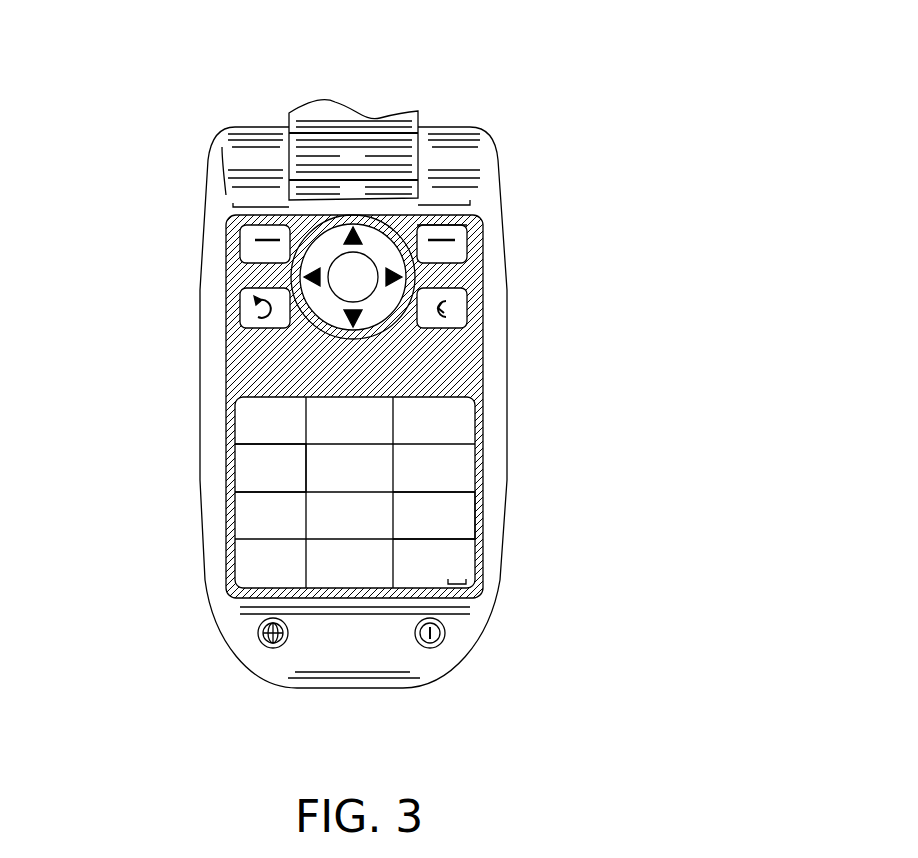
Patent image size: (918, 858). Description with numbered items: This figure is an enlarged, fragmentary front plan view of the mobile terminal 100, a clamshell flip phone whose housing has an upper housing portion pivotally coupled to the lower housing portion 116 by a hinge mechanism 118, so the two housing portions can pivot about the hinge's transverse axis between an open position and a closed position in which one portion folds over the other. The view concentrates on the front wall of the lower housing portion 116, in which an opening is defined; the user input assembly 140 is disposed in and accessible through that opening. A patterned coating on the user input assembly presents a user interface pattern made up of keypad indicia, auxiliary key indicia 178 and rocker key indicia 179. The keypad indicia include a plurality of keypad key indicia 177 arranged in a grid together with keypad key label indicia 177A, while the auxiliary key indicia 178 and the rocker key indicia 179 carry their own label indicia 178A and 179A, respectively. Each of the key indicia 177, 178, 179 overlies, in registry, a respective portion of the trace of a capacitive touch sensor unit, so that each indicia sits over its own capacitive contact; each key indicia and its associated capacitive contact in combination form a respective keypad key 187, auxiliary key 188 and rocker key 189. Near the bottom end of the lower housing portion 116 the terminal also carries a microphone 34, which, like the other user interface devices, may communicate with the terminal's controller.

The mobile terminal 100 is at (415, 36).
The lower housing portion 116 is at (222, 147).
The hinge mechanism 118 is at (300, 150).
The user input assembly 140 is at (541, 369).
The rocker key indicia 179 is at (379, 221).
The rocker key label indicia 179A is at (339, 234).
The rocker key 189 is at (430, 214).
The auxiliary key 188 is at (480, 284).
The auxiliary key indicia 178 is at (240, 322).
The auxiliary key label indicia 178A is at (457, 316).
The keypad key 187 is at (313, 403).
The keypad key indicia 177 is at (252, 451).
The keypad key label indicia 177A is at (469, 530).
The microphone 34 is at (447, 631).